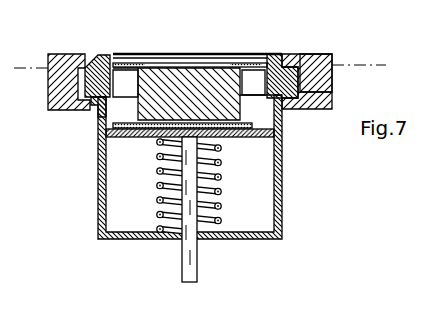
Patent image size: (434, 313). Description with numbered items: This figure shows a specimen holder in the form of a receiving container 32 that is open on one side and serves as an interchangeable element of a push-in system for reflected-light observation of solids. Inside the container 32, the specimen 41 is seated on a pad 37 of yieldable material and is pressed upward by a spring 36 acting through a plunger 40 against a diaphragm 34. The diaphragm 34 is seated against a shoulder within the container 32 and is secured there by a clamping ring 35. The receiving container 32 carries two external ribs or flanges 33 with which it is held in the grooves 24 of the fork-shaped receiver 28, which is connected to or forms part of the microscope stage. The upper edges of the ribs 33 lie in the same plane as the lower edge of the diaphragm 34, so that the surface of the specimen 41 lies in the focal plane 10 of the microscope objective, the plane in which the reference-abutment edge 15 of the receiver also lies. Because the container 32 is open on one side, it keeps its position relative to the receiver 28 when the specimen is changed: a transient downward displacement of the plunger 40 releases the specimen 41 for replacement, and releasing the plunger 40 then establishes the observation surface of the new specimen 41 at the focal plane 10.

The focal plane 10 is at (357, 65).
The reference-abutment edge 15 is at (295, 57).
The grooves 24 is at (332, 80).
The receiver 28 is at (312, 102).
The receiving container 32 is at (282, 192).
The ribs 33 is at (90, 102).
The diaphragm 34 is at (137, 53).
The clamping ring 35 is at (105, 62).
The spring 36 is at (221, 178).
The pad 37 is at (254, 125).
The plunger 40 is at (197, 257).
The specimen 41 is at (205, 70).